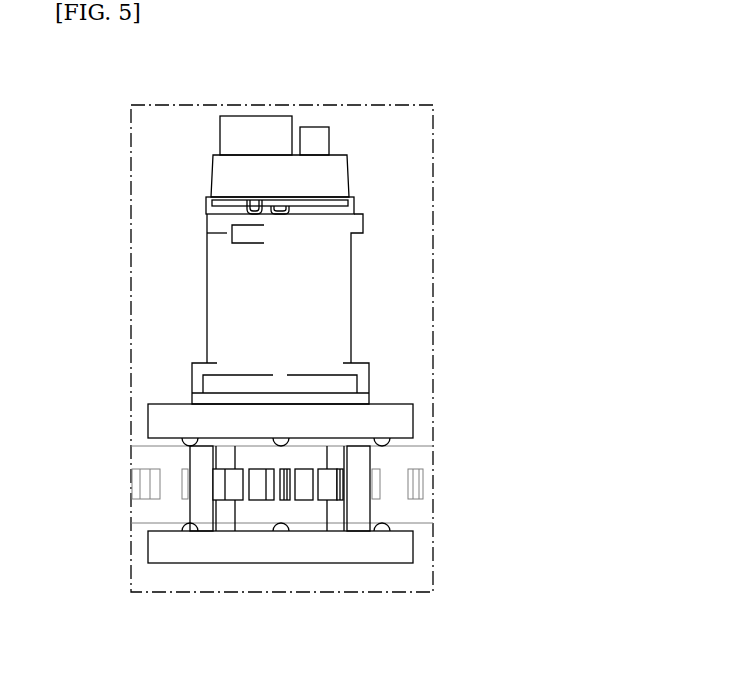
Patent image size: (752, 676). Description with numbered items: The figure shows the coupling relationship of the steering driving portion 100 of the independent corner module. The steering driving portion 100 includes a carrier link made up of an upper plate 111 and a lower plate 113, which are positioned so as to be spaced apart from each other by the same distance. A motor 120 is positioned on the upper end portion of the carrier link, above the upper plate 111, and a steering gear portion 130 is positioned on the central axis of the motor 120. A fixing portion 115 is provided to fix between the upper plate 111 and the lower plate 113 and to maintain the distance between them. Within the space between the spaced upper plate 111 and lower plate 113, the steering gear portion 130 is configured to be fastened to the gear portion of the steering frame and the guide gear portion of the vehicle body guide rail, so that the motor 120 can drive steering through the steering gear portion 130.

The steering driving portion 100 is at (373, 85).
The upper plate 111 is at (402, 420).
The lower plate 113 is at (405, 548).
The fixing portion 115 is at (200, 484).
The motor 120 is at (352, 280).
The steering gear portion 130 is at (260, 491).